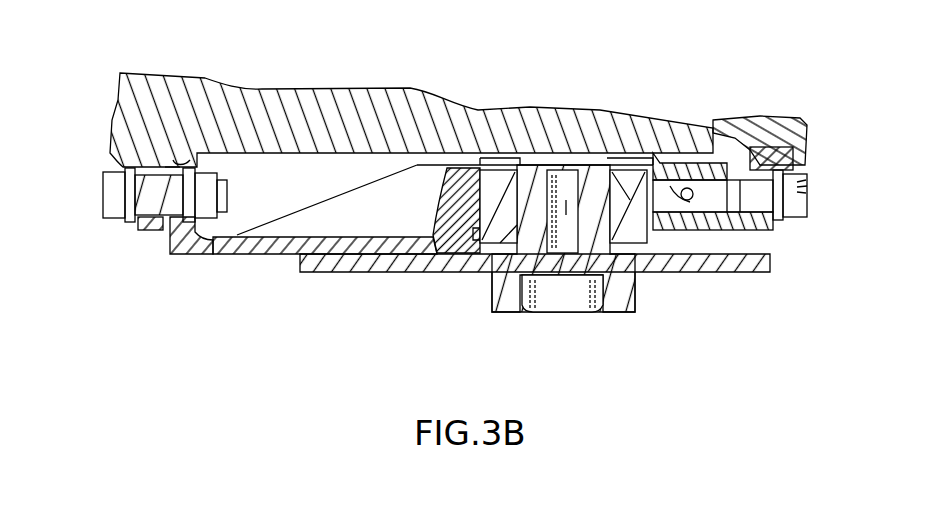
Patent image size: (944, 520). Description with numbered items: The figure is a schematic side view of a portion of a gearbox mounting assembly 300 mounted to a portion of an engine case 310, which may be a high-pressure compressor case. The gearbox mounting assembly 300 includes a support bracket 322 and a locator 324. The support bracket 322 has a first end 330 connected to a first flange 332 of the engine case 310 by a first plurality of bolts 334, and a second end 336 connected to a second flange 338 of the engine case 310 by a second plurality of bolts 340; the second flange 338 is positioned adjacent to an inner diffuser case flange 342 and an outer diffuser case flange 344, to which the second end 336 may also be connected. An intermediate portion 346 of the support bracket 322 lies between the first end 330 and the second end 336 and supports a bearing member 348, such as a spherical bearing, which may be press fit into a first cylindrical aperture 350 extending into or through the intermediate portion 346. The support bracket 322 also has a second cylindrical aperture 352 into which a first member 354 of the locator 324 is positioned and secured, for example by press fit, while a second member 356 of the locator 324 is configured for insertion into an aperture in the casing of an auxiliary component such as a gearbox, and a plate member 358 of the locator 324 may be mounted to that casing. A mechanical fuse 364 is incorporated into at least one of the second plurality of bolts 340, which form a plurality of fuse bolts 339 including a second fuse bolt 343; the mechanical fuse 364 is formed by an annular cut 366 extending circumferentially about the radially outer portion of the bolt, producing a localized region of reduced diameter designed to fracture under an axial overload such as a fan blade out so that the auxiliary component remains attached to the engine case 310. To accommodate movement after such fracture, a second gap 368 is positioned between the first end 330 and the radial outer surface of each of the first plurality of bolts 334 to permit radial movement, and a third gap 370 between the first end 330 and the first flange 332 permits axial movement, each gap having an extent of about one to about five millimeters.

The gearbox mounting assembly 300 is at (88, 74).
The engine case 310 is at (410, 88).
The support bracket 322 is at (195, 242).
The locator 324 is at (620, 298).
The first end 330 is at (172, 242).
The first flange 332 is at (147, 230).
The first plurality of bolts 334 is at (112, 182).
The second end 336 is at (668, 227).
The second flange 338 is at (712, 227).
The plurality of fuse bolts 339 is at (800, 191).
The second plurality of bolts 340 is at (800, 207).
The inner diffuser case flange 342 is at (740, 157).
The second fuse bolt 343 is at (800, 181).
The outer diffuser case flange 344 is at (773, 147).
The intermediate portion 346 is at (449, 212).
The bearing member 348 is at (493, 176).
The first cylindrical aperture 350 is at (476, 216).
The second cylindrical aperture 352 is at (543, 185).
The first member 354 is at (596, 182).
The second member 356 is at (507, 300).
The plate member 358 is at (328, 262).
The mechanical fuse 364 is at (682, 190).
The annular cut 366 is at (670, 184).
The second gap 368 is at (178, 165).
The third gap 370 is at (172, 166).